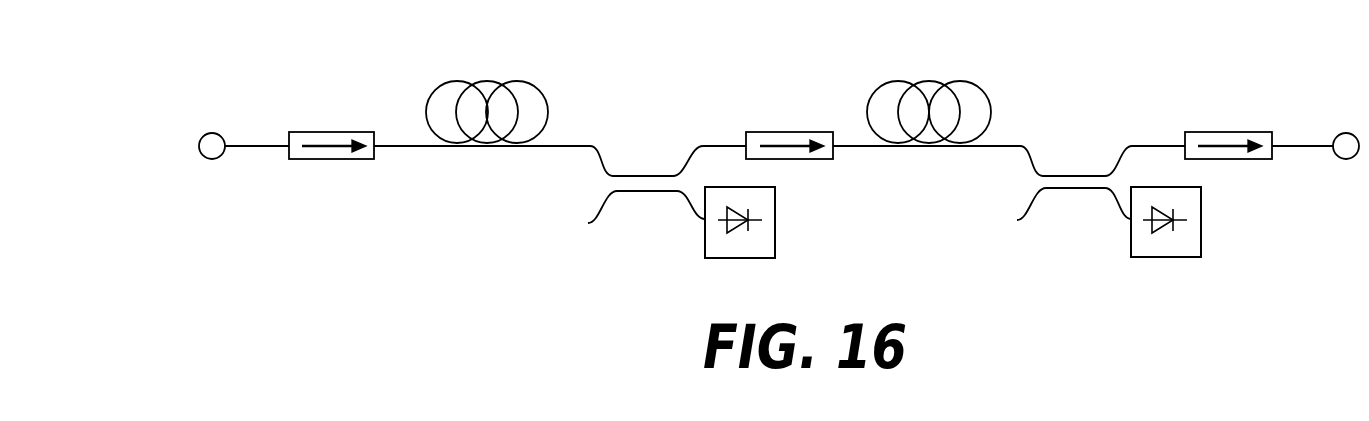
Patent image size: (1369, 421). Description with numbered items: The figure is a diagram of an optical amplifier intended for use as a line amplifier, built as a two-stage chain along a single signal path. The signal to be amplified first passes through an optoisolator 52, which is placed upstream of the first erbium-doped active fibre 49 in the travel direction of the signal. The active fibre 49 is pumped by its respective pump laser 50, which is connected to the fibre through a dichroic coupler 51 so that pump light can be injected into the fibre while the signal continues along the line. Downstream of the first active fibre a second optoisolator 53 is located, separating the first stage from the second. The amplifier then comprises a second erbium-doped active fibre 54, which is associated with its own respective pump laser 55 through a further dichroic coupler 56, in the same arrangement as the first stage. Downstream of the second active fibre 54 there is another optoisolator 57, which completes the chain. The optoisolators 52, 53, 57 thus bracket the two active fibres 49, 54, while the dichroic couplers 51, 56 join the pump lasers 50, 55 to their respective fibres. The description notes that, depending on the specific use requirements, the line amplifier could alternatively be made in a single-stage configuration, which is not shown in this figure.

The erbium-doped active fibre 49 is at (543, 81).
The pump laser 50 is at (765, 247).
The dichroic coupler 51 is at (655, 175).
The optoisolator 52 is at (328, 132).
The second optoisolator 53 is at (788, 131).
The second erbium-doped active fibre 54 is at (983, 88).
The pump laser 55 is at (1190, 240).
The dichroic coupler 56 is at (1083, 175).
The optoisolator 57 is at (1228, 131).